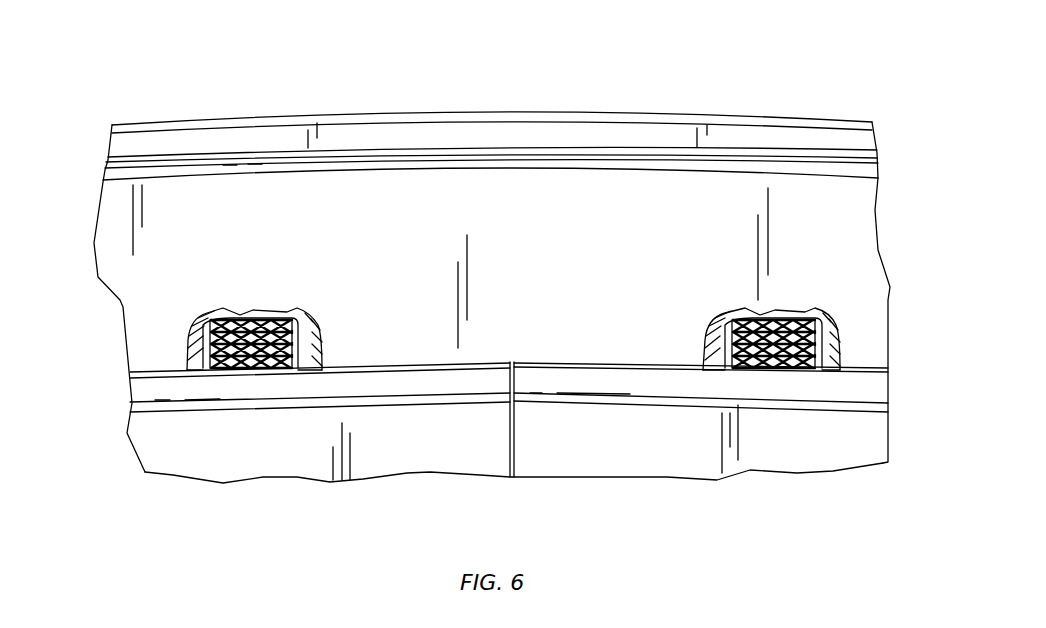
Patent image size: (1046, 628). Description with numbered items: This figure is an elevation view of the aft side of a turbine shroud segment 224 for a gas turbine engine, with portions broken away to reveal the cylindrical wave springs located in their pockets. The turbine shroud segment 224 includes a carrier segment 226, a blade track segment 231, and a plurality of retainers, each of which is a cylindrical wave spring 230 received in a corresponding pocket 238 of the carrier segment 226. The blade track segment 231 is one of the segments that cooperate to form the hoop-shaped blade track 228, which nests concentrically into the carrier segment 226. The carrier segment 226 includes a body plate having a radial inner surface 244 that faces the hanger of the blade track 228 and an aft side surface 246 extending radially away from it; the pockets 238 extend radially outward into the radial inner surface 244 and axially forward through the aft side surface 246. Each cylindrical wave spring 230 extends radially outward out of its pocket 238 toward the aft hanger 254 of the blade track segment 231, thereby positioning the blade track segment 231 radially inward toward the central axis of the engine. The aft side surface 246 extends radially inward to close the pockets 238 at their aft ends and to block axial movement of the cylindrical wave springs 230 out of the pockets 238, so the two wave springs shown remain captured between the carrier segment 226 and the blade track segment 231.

The turbine shroud segment 224 is at (712, 66).
The carrier segment 226 is at (233, 105).
The blade track 228 is at (128, 458).
The cylindrical wave spring 230 is at (232, 305).
The blade track segment 231 is at (265, 443).
The pocket 238 is at (198, 352).
The radial inner surface 244 is at (370, 360).
The aft side surface 246 is at (518, 208).
The aft hanger 254 is at (431, 445).